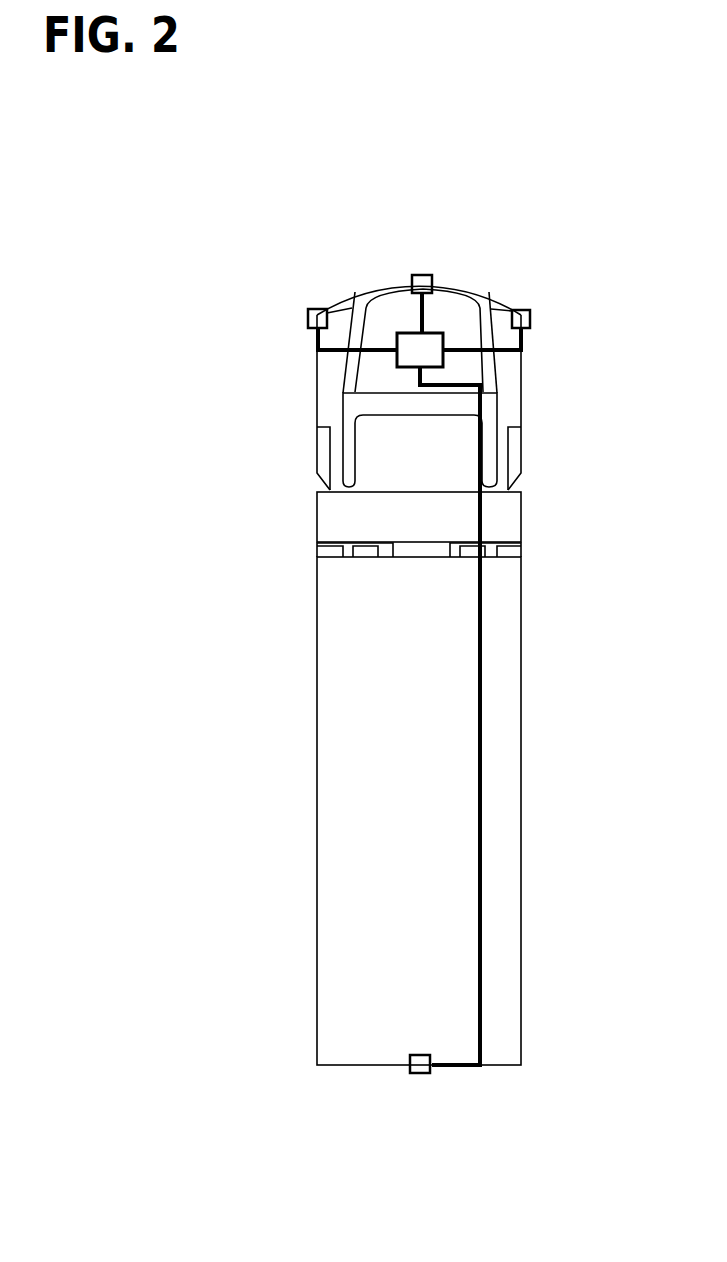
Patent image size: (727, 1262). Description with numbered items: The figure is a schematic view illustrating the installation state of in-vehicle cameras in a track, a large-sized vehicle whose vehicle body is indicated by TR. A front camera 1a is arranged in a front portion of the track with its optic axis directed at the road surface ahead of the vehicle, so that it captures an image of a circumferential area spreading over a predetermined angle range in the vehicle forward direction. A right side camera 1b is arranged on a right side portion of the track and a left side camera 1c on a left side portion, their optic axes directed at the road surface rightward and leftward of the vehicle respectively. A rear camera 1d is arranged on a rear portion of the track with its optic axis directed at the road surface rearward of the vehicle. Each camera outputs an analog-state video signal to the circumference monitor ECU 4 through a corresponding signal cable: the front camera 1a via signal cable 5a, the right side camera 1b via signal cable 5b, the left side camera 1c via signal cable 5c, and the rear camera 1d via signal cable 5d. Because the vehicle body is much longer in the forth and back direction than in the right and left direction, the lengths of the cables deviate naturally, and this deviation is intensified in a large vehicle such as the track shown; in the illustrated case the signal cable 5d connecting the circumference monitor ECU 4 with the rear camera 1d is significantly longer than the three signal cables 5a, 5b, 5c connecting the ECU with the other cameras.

The front camera 1a is at (425, 274).
The right side camera 1b is at (528, 311).
The left side camera 1c is at (309, 311).
The rear camera 1d is at (421, 1074).
The circumference monitor ECU 4 is at (449, 362).
The signal cable 5a is at (419, 314).
The signal cable 5b is at (507, 346).
The signal cable 5c is at (321, 343).
The signal cable 5d is at (482, 779).
The vehicle body of the track TR is at (517, 513).